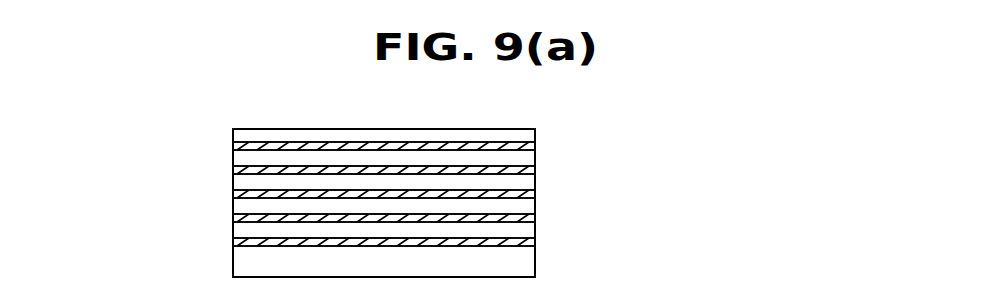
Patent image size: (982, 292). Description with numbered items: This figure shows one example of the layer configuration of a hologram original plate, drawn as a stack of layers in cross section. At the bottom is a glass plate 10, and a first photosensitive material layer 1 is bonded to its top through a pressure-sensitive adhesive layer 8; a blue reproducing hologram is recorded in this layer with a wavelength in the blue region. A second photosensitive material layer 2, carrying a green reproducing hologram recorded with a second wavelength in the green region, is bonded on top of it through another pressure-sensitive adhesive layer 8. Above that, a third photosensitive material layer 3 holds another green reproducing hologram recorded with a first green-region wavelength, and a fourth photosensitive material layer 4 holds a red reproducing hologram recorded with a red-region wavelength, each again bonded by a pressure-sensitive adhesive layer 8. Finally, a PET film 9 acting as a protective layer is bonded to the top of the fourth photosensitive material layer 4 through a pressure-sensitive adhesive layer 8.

The PET film 9 is at (535, 134).
The pressure-sensitive adhesive layer 8 is at (535, 152).
The fourth photosensitive material layer 4 is at (245, 159).
The third photosensitive material layer 3 is at (245, 180).
The second photosensitive material layer 2 is at (245, 205).
The first photosensitive material layer 1 is at (245, 227).
The glass plate 10 is at (530, 262).